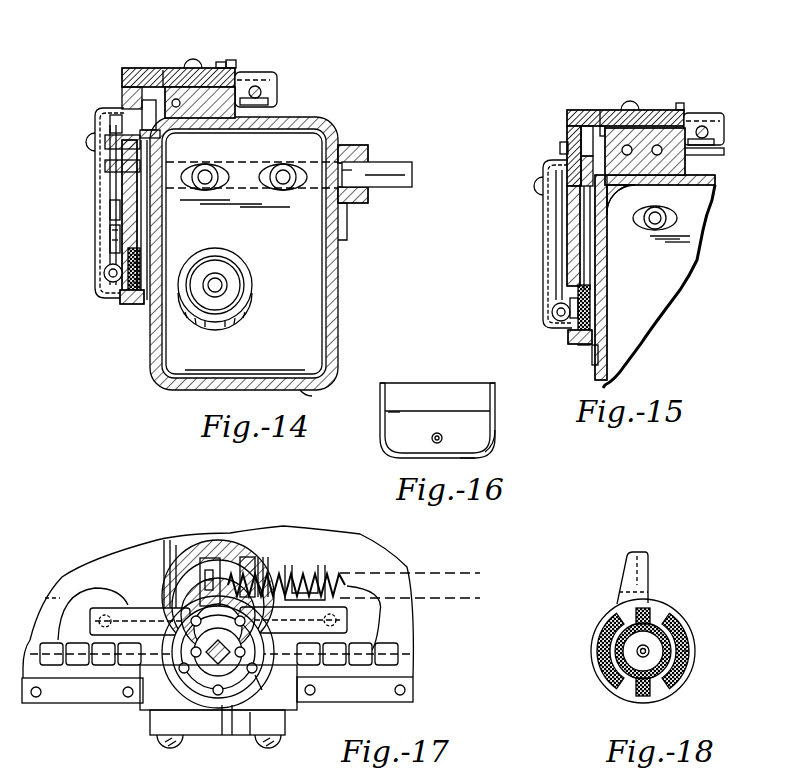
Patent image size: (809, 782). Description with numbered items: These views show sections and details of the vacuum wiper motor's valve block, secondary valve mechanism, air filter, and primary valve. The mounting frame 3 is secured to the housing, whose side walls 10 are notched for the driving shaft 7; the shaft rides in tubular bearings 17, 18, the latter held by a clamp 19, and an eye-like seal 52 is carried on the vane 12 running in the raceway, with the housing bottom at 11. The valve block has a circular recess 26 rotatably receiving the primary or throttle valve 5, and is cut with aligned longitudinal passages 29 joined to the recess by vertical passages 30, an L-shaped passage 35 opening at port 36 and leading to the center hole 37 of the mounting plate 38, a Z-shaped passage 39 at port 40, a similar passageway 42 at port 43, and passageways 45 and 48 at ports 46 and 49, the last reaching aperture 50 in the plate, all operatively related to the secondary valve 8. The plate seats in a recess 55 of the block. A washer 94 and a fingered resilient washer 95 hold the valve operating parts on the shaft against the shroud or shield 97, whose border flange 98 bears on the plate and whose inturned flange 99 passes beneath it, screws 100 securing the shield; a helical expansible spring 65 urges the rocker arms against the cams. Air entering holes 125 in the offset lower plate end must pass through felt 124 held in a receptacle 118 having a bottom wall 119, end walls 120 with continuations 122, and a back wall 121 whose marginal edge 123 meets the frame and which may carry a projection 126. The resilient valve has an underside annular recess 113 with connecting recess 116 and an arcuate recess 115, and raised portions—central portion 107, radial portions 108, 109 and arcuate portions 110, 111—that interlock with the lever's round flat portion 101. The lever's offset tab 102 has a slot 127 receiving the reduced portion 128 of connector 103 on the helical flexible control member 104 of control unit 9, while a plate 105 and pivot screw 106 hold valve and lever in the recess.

In FIG. 14, the mounting frame 3 is at (347, 235).
In FIG. 14, the primary or throttle valve 5 is at (226, 66).
In FIG. 15, the primary or throttle valve 5 is at (678, 108).
In FIG. 17, the primary or throttle valve 5 is at (181, 676).
In FIG. 18, the primary or throttle valve 5 is at (684, 641).
In FIG. 14, the driving shaft 7 is at (395, 163).
In FIG. 15, the secondary valve 8 is at (548, 163).
In FIG. 17, the control unit 9 is at (324, 542).
In FIG. 14, the side walls 10 is at (340, 290).
In FIG. 15, the side walls 10 is at (600, 385).
In FIG. 14, the housing bottom 11 is at (303, 391).
In FIG. 15, the vane 12 is at (659, 286).
In FIG. 14, the tubular bearing 17 is at (133, 220).
In FIG. 14, the tubular bearing 18 is at (362, 203).
In FIG. 14, the clamp 19 is at (360, 145).
In FIG. 14, the circular recess 26 is at (121, 75).
In FIG. 15, the circular recess 26 is at (622, 110).
In FIG. 14, the longitudinal passages 29 is at (205, 118).
In FIG. 15, the longitudinal passages 29 is at (630, 160).
In FIG. 17, the longitudinal passages 29 is at (145, 668).
In FIG. 17, the vertical passages 30 is at (218, 651).
In FIG. 14, the L-shaped vertical passage 35 is at (176, 108).
In FIG. 14, the port 36 is at (162, 70).
In FIG. 17, the port 36 is at (222, 712).
In FIG. 14, the center hole 37 is at (110, 130).
In FIG. 14, the mounting plate 38 is at (150, 228).
In FIG. 15, the mounting plate 38 is at (567, 278).
In FIG. 17, the Z-shaped passage 39 is at (45, 598).
In FIG. 17, the port 40 is at (180, 612).
In FIG. 15, the passageway 42 is at (677, 136).
In FIG. 17, the passageway 42 is at (345, 612).
In FIG. 17, the port 43 is at (260, 575).
In FIG. 17, the passageway 45 is at (188, 710).
In FIG. 17, the port 46 is at (186, 685).
In FIG. 15, the passageway 48 is at (622, 168).
In FIG. 17, the passageway 48 is at (252, 712).
In FIG. 15, the port 49 is at (600, 110).
In FIG. 17, the port 49 is at (258, 685).
In FIG. 15, the aperture 50 is at (613, 198).
In FIG. 14, the resilient seal 52 is at (250, 277).
In FIG. 14, the recess 55 is at (130, 103).
In FIG. 15, the recess 55 is at (590, 135).
In FIG. 14, the helical expansible spring 65 is at (112, 284).
In FIG. 14, the washer 94 is at (100, 160).
In FIG. 14, the fingered resilient washer 95 is at (100, 213).
In FIG. 14, the shroud or shield 97 is at (98, 190).
In FIG. 14, the border flange 98 is at (120, 110).
In FIG. 15, the border flange 98 is at (567, 145).
In FIG. 14, the inturned flange 99 is at (133, 305).
In FIG. 15, the inturned flange 99 is at (572, 342).
In FIG. 14, the screws 100 is at (88, 142).
In FIG. 15, the screws 100 is at (534, 186).
In FIG. 17, the screws 100 is at (165, 742).
In FIG. 18, the round flat portion 101 is at (665, 608).
In FIG. 14, the offset tab 102 is at (278, 78).
In FIG. 15, the offset tab 102 is at (724, 116).
In FIG. 17, the offset tab 102 is at (198, 560).
In FIG. 18, the offset tab 102 is at (623, 570).
In FIG. 17, the connector 103 is at (240, 560).
In FIG. 17, the helical flexible control member 104 is at (335, 575).
In FIG. 14, the plate 105 is at (233, 62).
In FIG. 15, the plate 105 is at (602, 112).
In FIG. 14, the pivot screw 106 is at (187, 66).
In FIG. 15, the pivot screw 106 is at (632, 105).
In FIG. 18, the round central portion 107 is at (625, 650).
In FIG. 18, the radial portion 108 is at (648, 612).
In FIG. 18, the radial portion 109 is at (650, 688).
In FIG. 18, the arcuate portion 110 is at (605, 672).
In FIG. 18, the arcuate portion 111 is at (678, 668).
In FIG. 14, the annular recess 113 is at (163, 68).
In FIG. 17, the annular recess 113 is at (232, 712).
In FIG. 15, the arcuate recess 115 is at (568, 128).
In FIG. 17, the connecting recess 116 is at (190, 600).
In FIG. 16, the receptacle 118 is at (502, 424).
In FIG. 15, the bottom wall 119 is at (590, 352).
In FIG. 16, the bottom wall 119 is at (470, 460).
In FIG. 16, the end walls 120 is at (495, 435).
In FIG. 16, the back wall 121 is at (395, 418).
In FIG. 16, the continuations 122 is at (388, 395).
In FIG. 16, the upper transverse marginal edge 123 is at (441, 411).
In FIG. 14, the felt 124 is at (138, 305).
In FIG. 15, the felt 124 is at (592, 336).
In FIG. 15, the holes 125 is at (580, 312).
In FIG. 15, the projection 126 is at (724, 155).
In FIG. 16, the projection 126 is at (430, 442).
In FIG. 14, the slot 127 is at (268, 101).
In FIG. 14, the reduced portion 128 is at (262, 92).